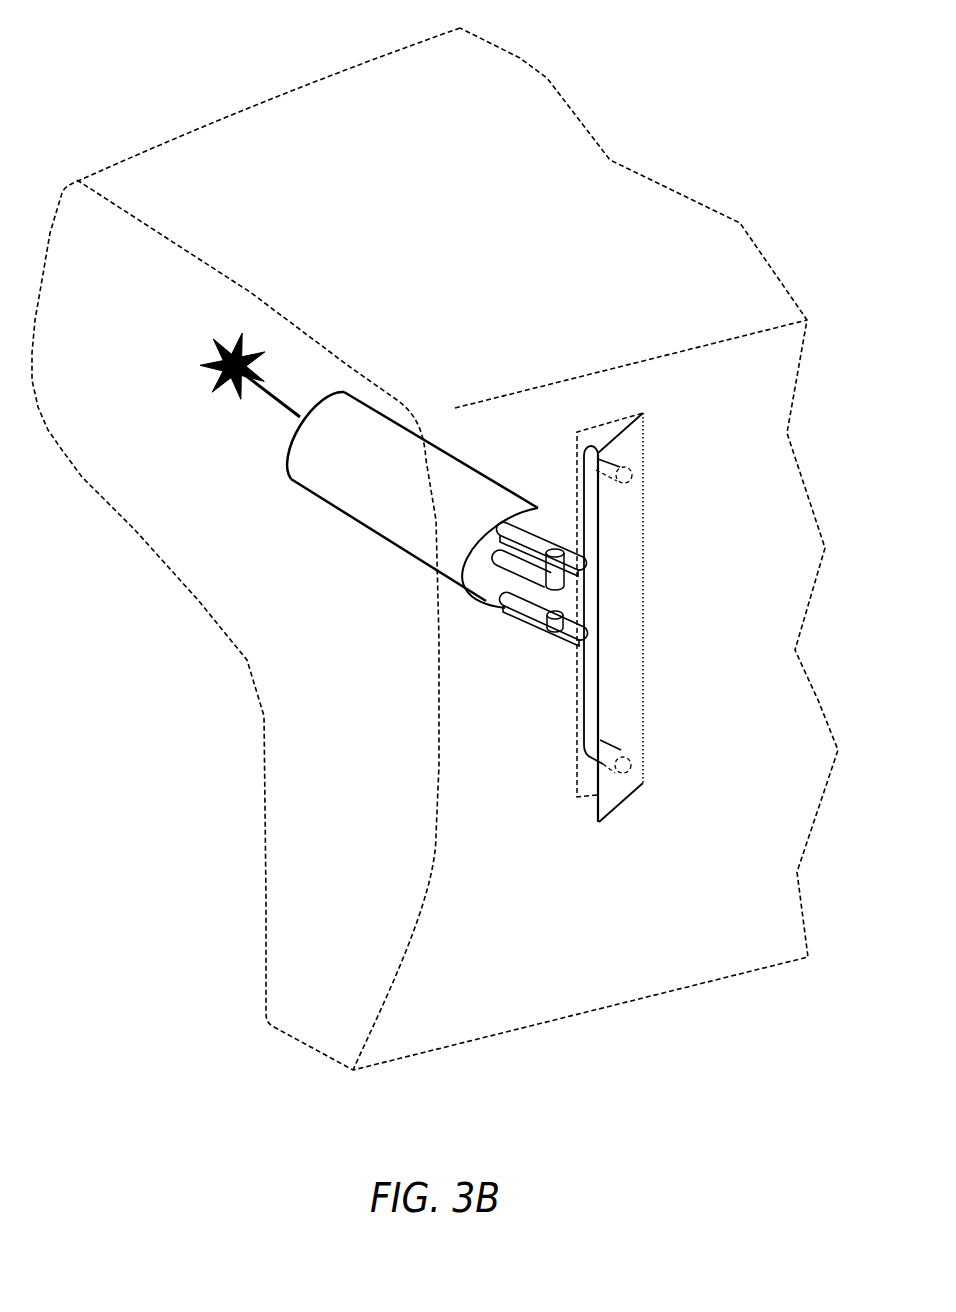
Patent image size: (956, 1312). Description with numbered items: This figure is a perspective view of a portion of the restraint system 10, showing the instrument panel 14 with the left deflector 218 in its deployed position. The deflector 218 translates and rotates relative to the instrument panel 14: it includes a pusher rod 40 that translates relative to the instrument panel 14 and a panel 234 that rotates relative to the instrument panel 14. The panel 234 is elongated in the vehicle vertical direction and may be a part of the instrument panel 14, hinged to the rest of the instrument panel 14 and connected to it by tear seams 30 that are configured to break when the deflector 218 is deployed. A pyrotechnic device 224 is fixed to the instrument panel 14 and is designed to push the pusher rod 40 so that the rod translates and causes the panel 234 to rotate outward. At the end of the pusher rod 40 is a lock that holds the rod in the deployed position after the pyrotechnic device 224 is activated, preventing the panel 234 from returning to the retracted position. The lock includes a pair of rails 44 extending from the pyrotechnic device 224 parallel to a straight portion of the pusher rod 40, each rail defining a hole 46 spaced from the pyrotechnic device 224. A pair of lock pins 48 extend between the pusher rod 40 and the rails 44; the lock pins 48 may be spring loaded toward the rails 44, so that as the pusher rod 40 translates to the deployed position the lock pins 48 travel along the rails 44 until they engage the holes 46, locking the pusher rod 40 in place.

The restraint system 10 is at (748, 88).
The instrument panel 14 is at (526, 62).
The tear seams 30 is at (608, 425).
The pusher rod 40 is at (512, 563).
The rails 44 is at (518, 527).
The hole 46 is at (555, 550).
The lock pins 48 is at (518, 612).
The left deflector 218 is at (480, 452).
The pyrotechnic device 224 is at (383, 500).
The panel 234 is at (625, 608).